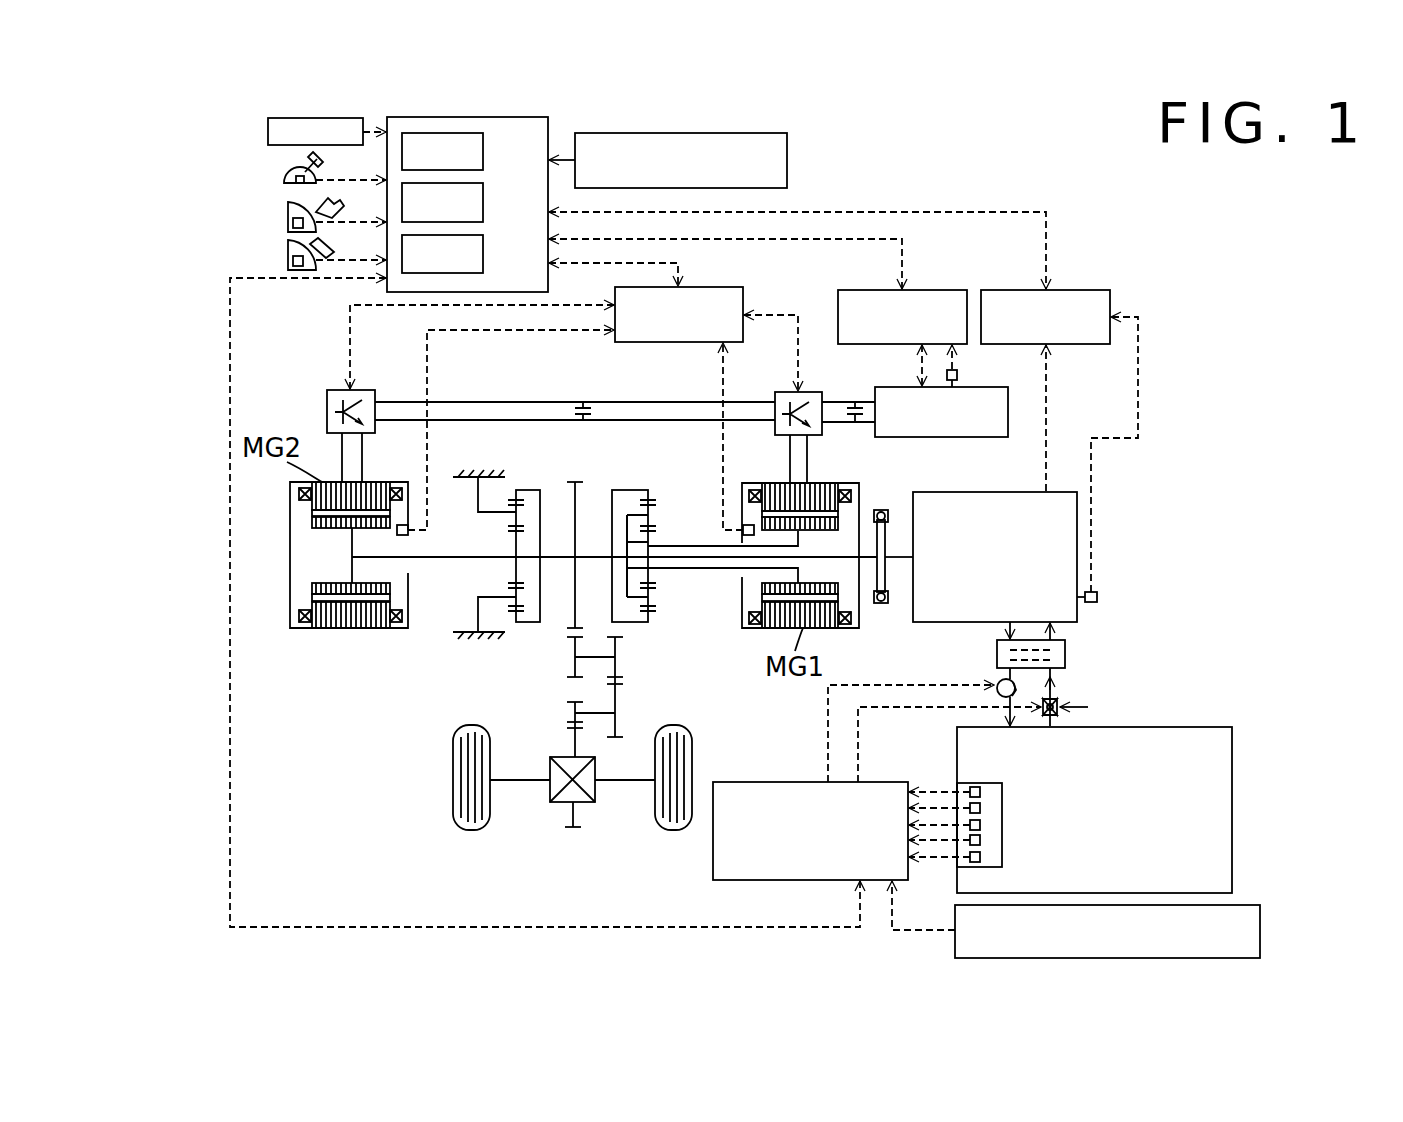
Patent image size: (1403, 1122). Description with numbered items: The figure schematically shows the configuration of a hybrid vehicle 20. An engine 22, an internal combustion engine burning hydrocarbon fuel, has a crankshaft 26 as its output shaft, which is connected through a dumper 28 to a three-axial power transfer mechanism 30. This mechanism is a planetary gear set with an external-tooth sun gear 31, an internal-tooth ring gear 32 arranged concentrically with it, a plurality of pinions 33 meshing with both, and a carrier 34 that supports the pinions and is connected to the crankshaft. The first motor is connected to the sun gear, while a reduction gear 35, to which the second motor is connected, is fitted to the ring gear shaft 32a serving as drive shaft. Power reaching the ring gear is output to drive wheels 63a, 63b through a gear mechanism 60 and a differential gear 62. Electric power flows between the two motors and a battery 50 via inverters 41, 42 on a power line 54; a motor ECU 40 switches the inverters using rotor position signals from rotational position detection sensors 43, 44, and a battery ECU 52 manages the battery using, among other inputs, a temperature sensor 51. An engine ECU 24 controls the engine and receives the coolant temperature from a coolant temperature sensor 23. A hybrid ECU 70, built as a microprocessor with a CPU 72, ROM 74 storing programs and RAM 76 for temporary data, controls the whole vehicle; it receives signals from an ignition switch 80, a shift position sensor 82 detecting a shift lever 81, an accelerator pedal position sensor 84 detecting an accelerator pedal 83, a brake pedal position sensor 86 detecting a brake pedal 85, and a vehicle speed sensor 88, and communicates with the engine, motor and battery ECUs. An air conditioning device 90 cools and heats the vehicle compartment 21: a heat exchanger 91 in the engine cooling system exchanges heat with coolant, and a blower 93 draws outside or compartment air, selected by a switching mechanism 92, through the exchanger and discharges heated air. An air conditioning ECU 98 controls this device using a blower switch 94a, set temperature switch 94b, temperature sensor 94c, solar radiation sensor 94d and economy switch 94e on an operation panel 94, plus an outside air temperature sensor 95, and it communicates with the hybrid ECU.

The hybrid vehicle 20 is at (926, 186).
The vehicle compartment 21 is at (1232, 810).
The engine 22 is at (958, 492).
The coolant temperature sensor 23 is at (1097, 597).
The engine ECU 24 is at (1082, 290).
The crankshaft 26 is at (894, 559).
The dumper 28 is at (882, 604).
The power transfer mechanism 30 is at (652, 489).
The sun gear 31 is at (653, 574).
The ring gear 32 is at (652, 613).
The ring gear shaft 32a is at (554, 553).
The pinions 33 is at (652, 594).
The carrier 34 is at (623, 532).
The reduction gear 35 is at (514, 478).
The motor ECU 40 is at (743, 291).
The inverter 41 is at (820, 392).
The inverter 42 is at (372, 390).
The rotational position detection sensor 43 is at (748, 525).
The rotational position detection sensor 44 is at (405, 525).
The battery 50 is at (932, 437).
The temperature sensor 51 is at (958, 375).
The battery ECU 52 is at (842, 290).
The power line 54 is at (623, 420).
The gear mechanism 60 is at (634, 700).
The differential gear 62 is at (598, 790).
The drive wheel 63a is at (453, 781).
The drive wheel 63b is at (674, 830).
The hybrid ECU 70 is at (548, 120).
The CPU 72 is at (483, 152).
The ROM 74 is at (483, 203).
The RAM 76 is at (483, 255).
The ignition switch 80 is at (268, 124).
The shift lever 81 is at (312, 160).
The shift position sensor 82 is at (290, 180).
The accelerator pedal 83 is at (292, 206).
The accelerator pedal position sensor 84 is at (290, 222).
The brake pedal 85 is at (290, 242).
The brake pedal position sensor 86 is at (290, 265).
The vehicle speed sensor 88 is at (787, 160).
The air conditioning device 90 is at (808, 739).
The heat exchanger 91 is at (1065, 650).
The switching mechanism 92 is at (1058, 700).
The blower 93 is at (997, 681).
The operation panel 94 is at (966, 868).
The blower switch 94a is at (977, 787).
The set temperature switch 94b is at (981, 808).
The temperature sensor 94c is at (981, 825).
The solar radiation sensor 94d is at (981, 840).
The economy switch 94e is at (981, 857).
The outside air temperature sensor 95 is at (1260, 930).
The air conditioning ECU 98 is at (808, 882).